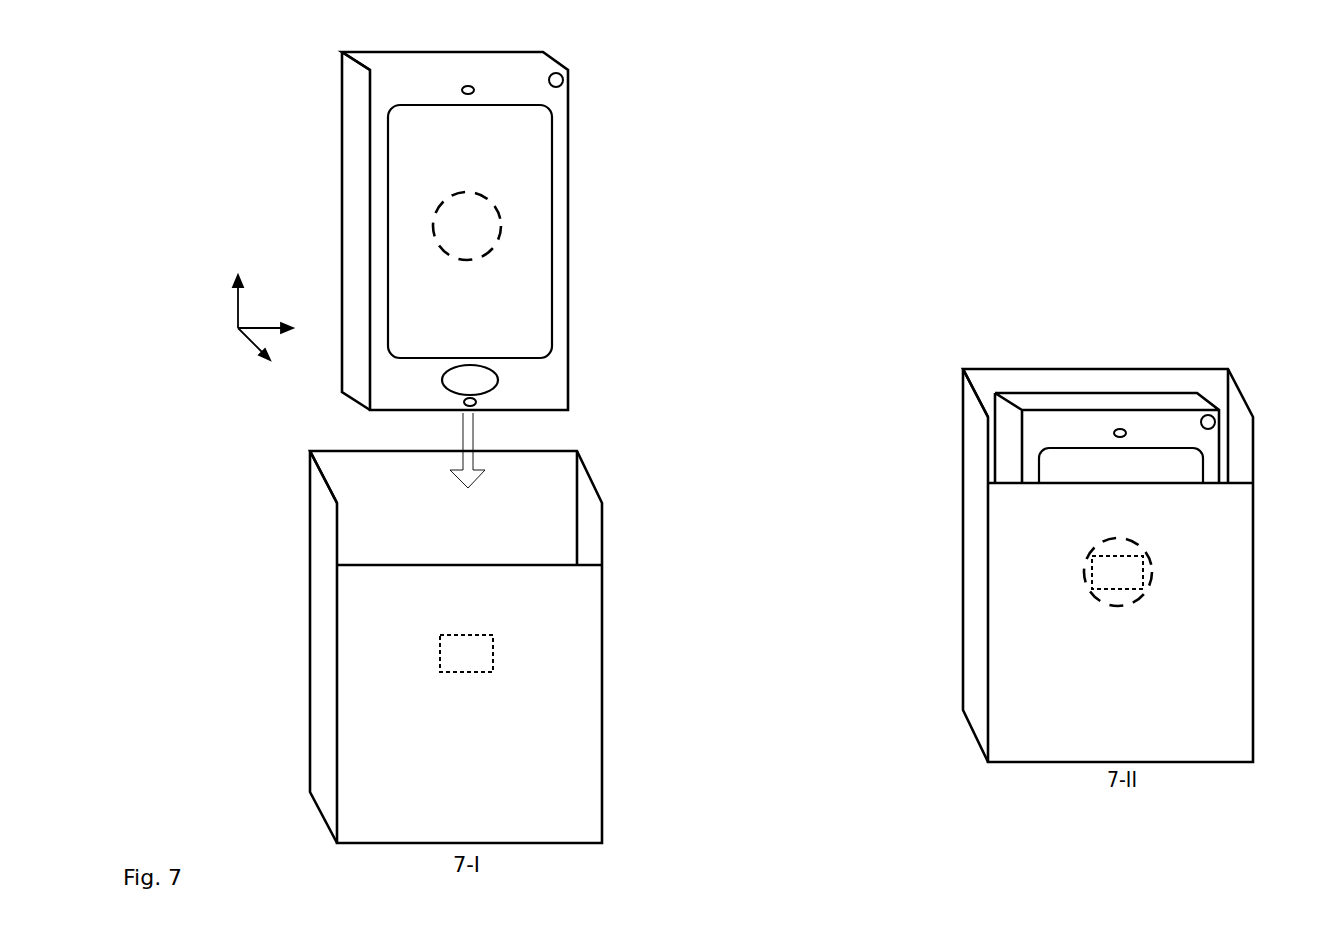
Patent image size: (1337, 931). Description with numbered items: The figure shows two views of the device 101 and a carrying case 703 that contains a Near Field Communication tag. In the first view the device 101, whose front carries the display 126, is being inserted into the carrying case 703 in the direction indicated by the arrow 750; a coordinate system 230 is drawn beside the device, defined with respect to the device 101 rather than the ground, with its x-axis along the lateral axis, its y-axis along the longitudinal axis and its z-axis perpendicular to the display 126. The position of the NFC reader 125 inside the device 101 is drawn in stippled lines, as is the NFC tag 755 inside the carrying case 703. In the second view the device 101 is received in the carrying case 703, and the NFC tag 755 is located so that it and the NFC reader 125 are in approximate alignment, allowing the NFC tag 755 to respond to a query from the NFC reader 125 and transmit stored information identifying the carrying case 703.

The device 101 is at (390, 55).
The NFC reader 125 is at (502, 215).
The display 126 is at (485, 306).
The coordinate system 230 is at (221, 301).
The arrow 750 is at (462, 422).
The NFC tag 755 is at (493, 652).
The carrying case 703 is at (398, 822).